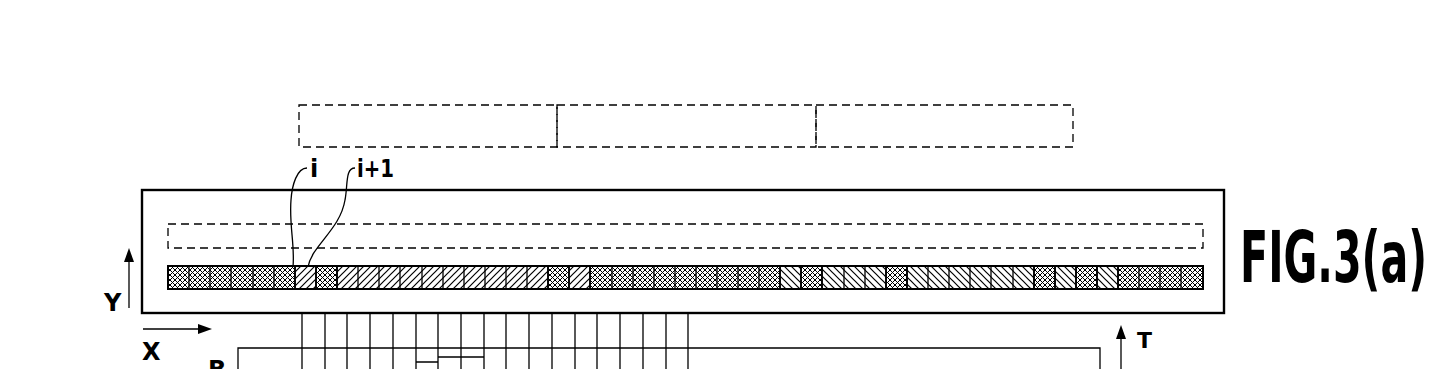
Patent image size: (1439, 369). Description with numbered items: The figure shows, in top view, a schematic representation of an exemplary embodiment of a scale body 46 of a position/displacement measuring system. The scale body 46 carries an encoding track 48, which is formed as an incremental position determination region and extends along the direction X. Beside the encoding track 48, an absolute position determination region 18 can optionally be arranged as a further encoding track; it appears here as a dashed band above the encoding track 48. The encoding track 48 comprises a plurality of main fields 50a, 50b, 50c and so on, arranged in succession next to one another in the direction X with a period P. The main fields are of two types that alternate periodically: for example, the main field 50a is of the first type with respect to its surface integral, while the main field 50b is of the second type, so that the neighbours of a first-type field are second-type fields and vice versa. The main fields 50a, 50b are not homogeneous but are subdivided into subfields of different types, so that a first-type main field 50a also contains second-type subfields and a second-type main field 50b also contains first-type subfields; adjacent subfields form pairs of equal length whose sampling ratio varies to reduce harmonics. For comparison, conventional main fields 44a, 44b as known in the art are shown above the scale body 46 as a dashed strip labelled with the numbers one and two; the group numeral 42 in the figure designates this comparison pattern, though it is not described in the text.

The pattern data 42 is at (686, 80).
The main field known in the art 44a is at (377, 117).
The main field known in the art 44b is at (623, 126).
The scale body 46 is at (1160, 213).
The absolute position determination region 18 is at (1087, 234).
The encoding track 48 is at (702, 259).
The main field of the first type 50a is at (445, 256).
The main field of the second type 50b is at (698, 254).
The main field 50c is at (956, 252).